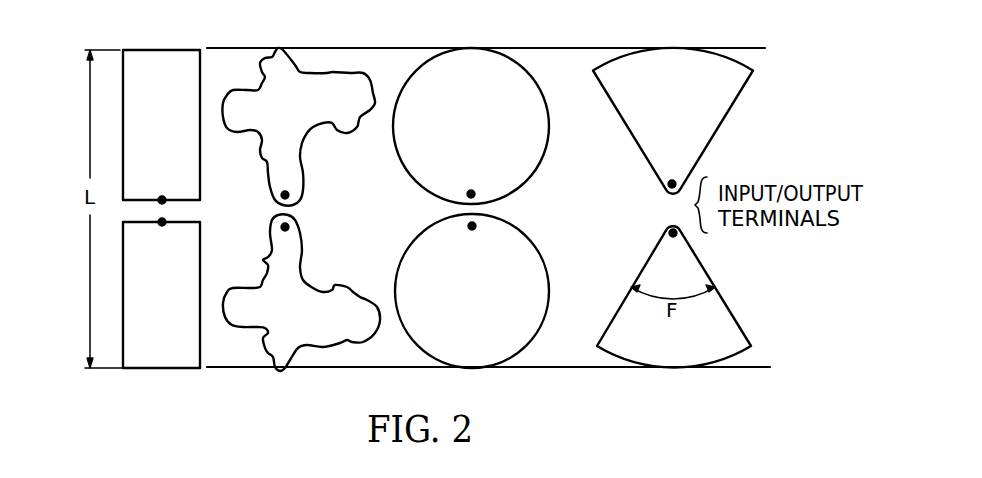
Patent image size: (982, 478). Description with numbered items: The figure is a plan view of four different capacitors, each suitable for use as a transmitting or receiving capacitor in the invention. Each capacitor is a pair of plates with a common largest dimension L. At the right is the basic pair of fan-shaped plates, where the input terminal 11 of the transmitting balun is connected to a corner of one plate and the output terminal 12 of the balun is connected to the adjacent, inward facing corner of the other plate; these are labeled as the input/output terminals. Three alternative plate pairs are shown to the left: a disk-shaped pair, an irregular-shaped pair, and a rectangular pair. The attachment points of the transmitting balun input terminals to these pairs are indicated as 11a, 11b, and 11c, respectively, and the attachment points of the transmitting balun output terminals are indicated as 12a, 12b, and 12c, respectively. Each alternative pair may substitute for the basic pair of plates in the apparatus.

The input terminal 11 is at (672, 184).
The input terminal attachment point 11a is at (471, 194).
The input terminal attachment point 11b is at (285, 195).
The input terminal attachment point 11c is at (162, 200).
The output terminal 12 is at (663, 226).
The output terminal attachment point 12a is at (472, 226).
The output terminal attachment point 12b is at (285, 227).
The output terminal attachment point 12c is at (162, 222).